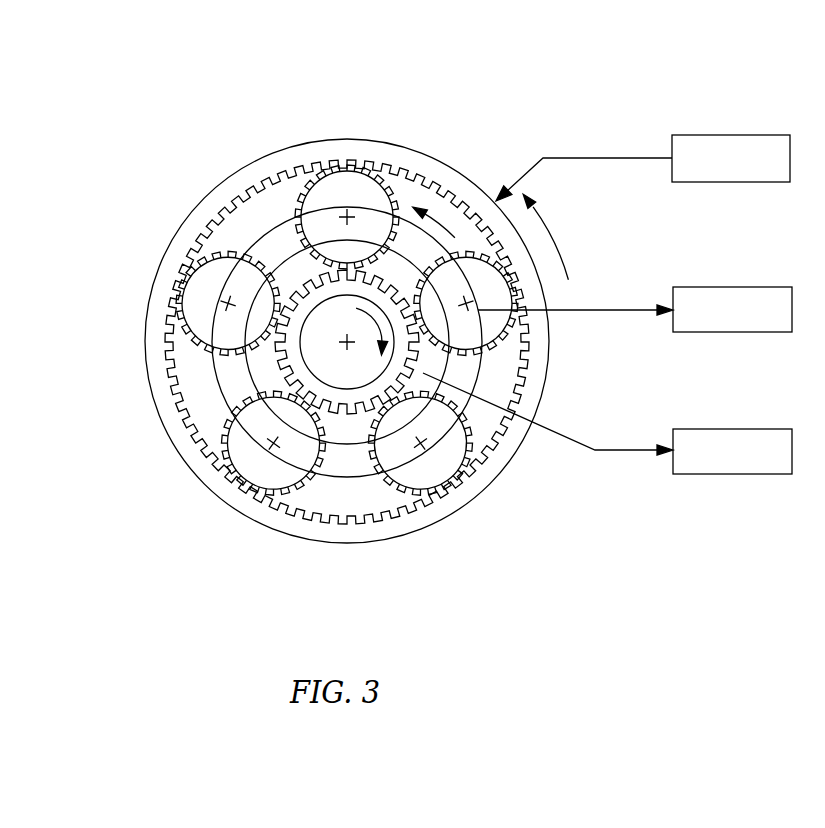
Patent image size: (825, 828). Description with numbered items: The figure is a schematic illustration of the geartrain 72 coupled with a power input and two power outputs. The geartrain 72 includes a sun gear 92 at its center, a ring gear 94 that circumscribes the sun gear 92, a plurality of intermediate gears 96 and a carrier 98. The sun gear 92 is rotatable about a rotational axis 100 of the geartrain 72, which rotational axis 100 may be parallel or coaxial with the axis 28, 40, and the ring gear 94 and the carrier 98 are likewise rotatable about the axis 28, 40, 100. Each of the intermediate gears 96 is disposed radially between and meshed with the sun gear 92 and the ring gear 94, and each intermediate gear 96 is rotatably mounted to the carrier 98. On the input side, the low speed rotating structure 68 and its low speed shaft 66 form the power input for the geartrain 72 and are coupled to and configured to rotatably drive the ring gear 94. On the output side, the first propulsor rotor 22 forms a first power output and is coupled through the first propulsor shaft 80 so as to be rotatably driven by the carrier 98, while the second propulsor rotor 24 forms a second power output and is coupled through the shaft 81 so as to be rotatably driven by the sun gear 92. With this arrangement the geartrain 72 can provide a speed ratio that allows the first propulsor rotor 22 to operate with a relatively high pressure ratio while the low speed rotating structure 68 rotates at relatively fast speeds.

The geartrain 72 is at (490, 128).
The ring gear 94 is at (323, 138).
The carrier 98 is at (268, 230).
The intermediate gears 96 is at (213, 250).
The sun gear 92 is at (285, 363).
The axis 28 is at (358, 444).
The axis 40 is at (358, 444).
The rotational axis 100 is at (348, 348).
The low speed shaft 66 is at (643, 127).
The low speed rotating structure 68 is at (685, 135).
The first propulsor rotor 22 is at (635, 269).
The first propulsor shaft 80 is at (685, 287).
The second propulsor rotor 24 is at (607, 412).
The shaft 81 is at (685, 429).